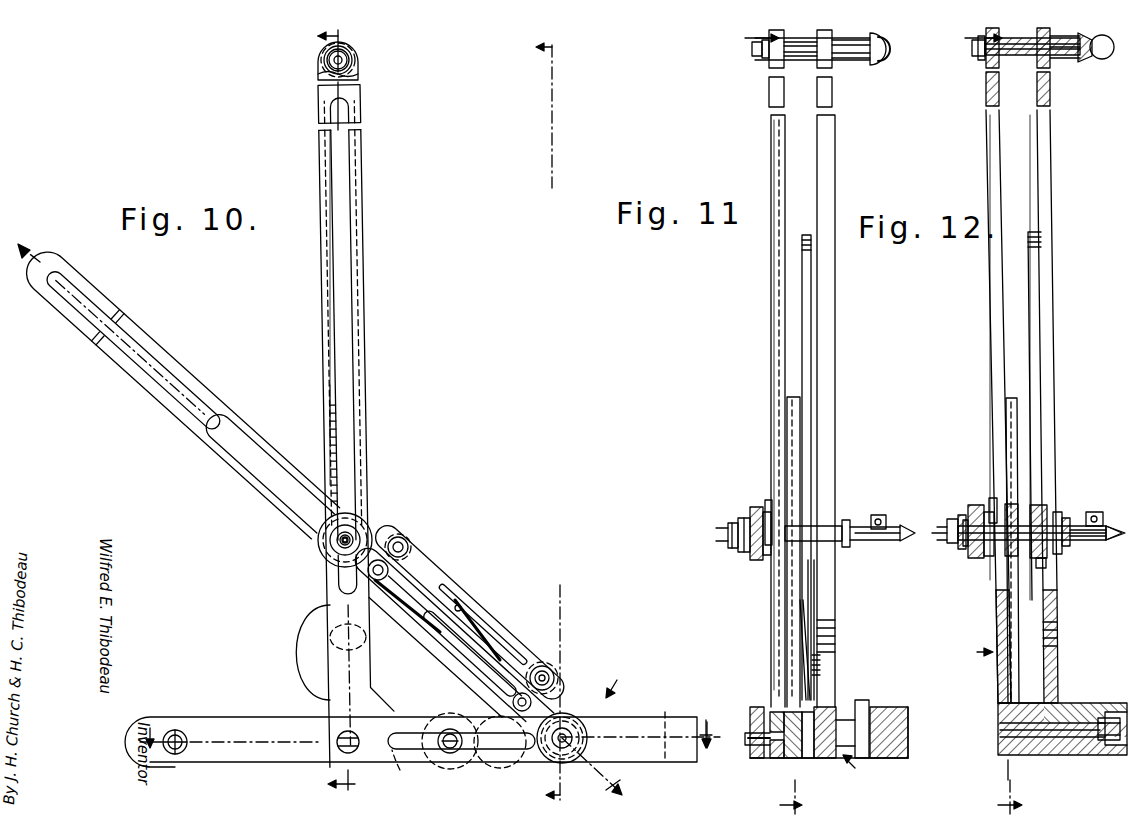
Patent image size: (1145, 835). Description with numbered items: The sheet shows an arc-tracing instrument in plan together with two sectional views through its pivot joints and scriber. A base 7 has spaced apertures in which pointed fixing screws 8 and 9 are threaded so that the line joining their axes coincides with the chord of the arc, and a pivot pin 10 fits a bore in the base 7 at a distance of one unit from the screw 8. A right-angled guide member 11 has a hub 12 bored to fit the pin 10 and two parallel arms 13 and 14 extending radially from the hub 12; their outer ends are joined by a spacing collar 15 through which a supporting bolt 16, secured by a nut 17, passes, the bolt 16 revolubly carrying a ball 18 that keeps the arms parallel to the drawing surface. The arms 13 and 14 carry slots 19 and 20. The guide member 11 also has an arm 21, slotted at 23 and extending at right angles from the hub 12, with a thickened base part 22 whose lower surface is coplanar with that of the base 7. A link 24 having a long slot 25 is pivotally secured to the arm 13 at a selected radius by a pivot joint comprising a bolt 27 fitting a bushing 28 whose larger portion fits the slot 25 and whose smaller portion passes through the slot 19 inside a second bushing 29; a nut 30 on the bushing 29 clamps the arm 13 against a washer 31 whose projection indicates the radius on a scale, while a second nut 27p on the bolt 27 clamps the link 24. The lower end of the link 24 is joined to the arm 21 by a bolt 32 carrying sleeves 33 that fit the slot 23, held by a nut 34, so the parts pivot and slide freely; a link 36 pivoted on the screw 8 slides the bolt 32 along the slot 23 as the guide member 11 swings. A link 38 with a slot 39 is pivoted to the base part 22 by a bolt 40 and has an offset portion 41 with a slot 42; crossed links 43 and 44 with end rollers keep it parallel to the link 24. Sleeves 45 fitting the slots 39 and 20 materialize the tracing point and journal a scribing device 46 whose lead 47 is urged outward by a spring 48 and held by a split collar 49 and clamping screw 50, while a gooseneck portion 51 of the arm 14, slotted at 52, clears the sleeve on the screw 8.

In FIG. 10, the base 7 is at (237, 762).
In FIG. 12, the base 7 is at (1078, 750).
In FIG. 10, the pointed fixing screw 8 is at (444, 752).
In FIG. 11, the pointed fixing screw 8 is at (906, 730).
In FIG. 12, the pointed fixing screw 8 is at (918, 735).
In FIG. 10, the pointed fixing screw 9 is at (170, 755).
In FIG. 10, the pivot pin 10 is at (337, 743).
In FIG. 12, the pivot pin 10 is at (1000, 729).
In FIG. 10, the right-angled guide member 11 is at (584, 419).
In FIG. 11, the right-angled guide member 11 is at (854, 771).
In FIG. 12, the right-angled guide member 11 is at (975, 655).
In FIG. 10, the hub 12 is at (344, 33).
In FIG. 12, the hub 12 is at (1034, 756).
In FIG. 10, the arm 13 is at (362, 333).
In FIG. 11, the arm 13 is at (771, 346).
In FIG. 12, the arm 13 is at (1000, 616).
In FIG. 10, the arm 14 is at (334, 512).
In FIG. 11, the arm 14 is at (835, 346).
In FIG. 12, the arm 14 is at (1057, 602).
In FIG. 10, the spacing collar 15 is at (355, 75).
In FIG. 11, the spacing collar 15 is at (796, 78).
In FIG. 12, the spacing collar 15 is at (1012, 70).
In FIG. 10, the supporting bolt 16 is at (325, 61).
In FIG. 11, the supporting bolt 16 is at (851, 60).
In FIG. 12, the supporting bolt 16 is at (1066, 58).
In FIG. 10, the nut 17 is at (350, 58).
In FIG. 11, the nut 17 is at (758, 56).
In FIG. 12, the nut 17 is at (980, 57).
In FIG. 11, the ball 18 is at (886, 52).
In FIG. 12, the ball 18 is at (1104, 60).
In FIG. 10, the slot 19 is at (332, 282).
In FIG. 11, the slot 19 is at (773, 303).
In FIG. 12, the slot 19 is at (988, 162).
In FIG. 12, the slot 20 is at (1050, 437).
In FIG. 10, the arm 21 is at (522, 760).
In FIG. 11, the arm 21 is at (774, 758).
In FIG. 11, the thickened base part 22 is at (908, 742).
In FIG. 12, the thickened base part 22 is at (908, 742).
In FIG. 10, the slot 23 is at (404, 732).
In FIG. 11, the slot 23 is at (790, 758).
In FIG. 10, the link 24 is at (262, 486).
In FIG. 11, the link 24 is at (790, 452).
In FIG. 12, the link 24 is at (1006, 423).
In FIG. 10, the slot 25 is at (228, 456).
In FIG. 12, the slot 25 is at (1014, 556).
In FIG. 10, the bolt 27 is at (350, 537).
In FIG. 11, the bolt 27 is at (728, 532).
In FIG. 12, the bolt 27 is at (950, 535).
In FIG. 10, the second nut 27p is at (336, 552).
In FIG. 11, the second nut 27p is at (733, 548).
In FIG. 12, the second nut 27p is at (958, 550).
In FIG. 12, the bushing 28 is at (964, 522).
In FIG. 11, the second bushing 29 is at (770, 555).
In FIG. 12, the second bushing 29 is at (992, 558).
In FIG. 10, the nut 30 is at (320, 548).
In FIG. 11, the nut 30 is at (750, 512).
In FIG. 12, the nut 30 is at (972, 508).
In FIG. 10, the washer 31 is at (338, 512).
In FIG. 11, the washer 31 is at (768, 502).
In FIG. 12, the washer 31 is at (991, 498).
In FIG. 10, the bolt 32 is at (565, 730).
In FIG. 11, the bolt 32 is at (750, 740).
In FIG. 11, the sleeves 33 is at (778, 710).
In FIG. 10, the nut 34 is at (586, 740).
In FIG. 11, the nut 34 is at (752, 712).
In FIG. 10, the link 36 is at (474, 755).
In FIG. 11, the link 36 is at (816, 758).
In FIG. 10, the link 38 is at (152, 384).
In FIG. 11, the link 38 is at (802, 252).
In FIG. 12, the link 38 is at (1026, 240).
In FIG. 10, the slot 39 is at (195, 396).
In FIG. 12, the slot 39 is at (1046, 566).
In FIG. 11, the bolt 40 is at (856, 730).
In FIG. 10, the offset portion 41 is at (452, 583).
In FIG. 11, the offset portion 41 is at (835, 600).
In FIG. 10, the slot 42 is at (478, 611).
In FIG. 10, the crossed link 43 is at (412, 556).
In FIG. 11, the crossed link 43 is at (800, 636).
In FIG. 10, the crossed link 44 is at (522, 650).
In FIG. 11, the crossed link 44 is at (820, 656).
In FIG. 12, the sleeves 45 is at (1045, 505).
In FIG. 11, the scribing device 46 is at (845, 520).
In FIG. 12, the scribing device 46 is at (1066, 542).
In FIG. 11, the lead or tracing point 47 is at (892, 540).
In FIG. 12, the lead or tracing point 47 is at (1112, 538).
In FIG. 12, the spring 48 is at (1060, 516).
In FIG. 11, the split collar 49 is at (886, 528).
In FIG. 12, the split collar 49 is at (1100, 526).
In FIG. 11, the clamping screw 50 is at (879, 514).
In FIG. 12, the clamping screw 50 is at (1096, 512).
In FIG. 10, the gooseneck portion 51 is at (304, 640).
In FIG. 10, the slot 52 is at (362, 648).
In FIG. 11, the slot 52 is at (835, 634).
In FIG. 12, the slot 52 is at (1058, 631).